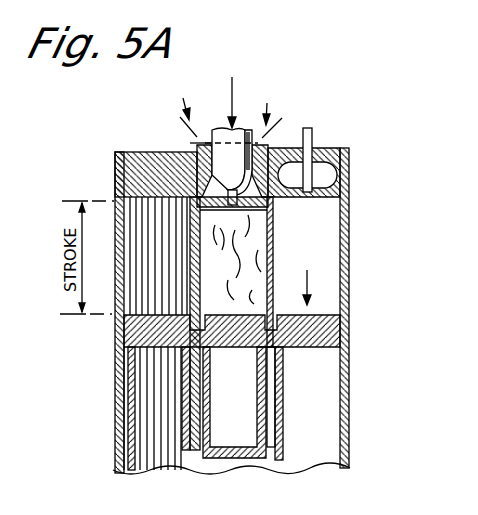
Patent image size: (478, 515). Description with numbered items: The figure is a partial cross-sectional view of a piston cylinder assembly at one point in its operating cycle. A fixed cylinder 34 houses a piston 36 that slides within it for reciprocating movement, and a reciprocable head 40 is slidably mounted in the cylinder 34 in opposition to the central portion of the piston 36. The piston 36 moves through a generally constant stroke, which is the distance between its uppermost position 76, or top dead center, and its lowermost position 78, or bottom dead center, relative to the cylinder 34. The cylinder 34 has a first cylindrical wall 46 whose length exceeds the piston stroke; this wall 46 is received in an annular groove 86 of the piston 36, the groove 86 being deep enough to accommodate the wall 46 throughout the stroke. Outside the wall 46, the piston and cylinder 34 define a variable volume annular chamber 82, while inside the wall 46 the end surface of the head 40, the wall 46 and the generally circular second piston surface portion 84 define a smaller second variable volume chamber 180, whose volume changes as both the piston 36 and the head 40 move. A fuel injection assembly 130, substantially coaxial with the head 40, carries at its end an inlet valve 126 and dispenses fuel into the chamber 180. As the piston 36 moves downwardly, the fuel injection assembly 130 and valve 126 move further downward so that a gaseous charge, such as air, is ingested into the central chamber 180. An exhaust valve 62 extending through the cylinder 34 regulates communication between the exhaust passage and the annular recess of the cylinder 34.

The cylinder 34 is at (352, 163).
The piston 36 is at (296, 446).
The reciprocable head 40 is at (270, 143).
The first cylindrical wall 46 is at (274, 252).
The exhaust valve 62 is at (314, 135).
The uppermost position 76 is at (64, 200).
The lowermost position 78 is at (64, 315).
The annular chamber 82 is at (153, 286).
The second piston surface portion 84 is at (131, 338).
The annular groove 86 is at (270, 402).
The valve 126 is at (258, 212).
The fuel injection assembly 130 is at (247, 130).
The second variable volume chamber 180 is at (247, 297).